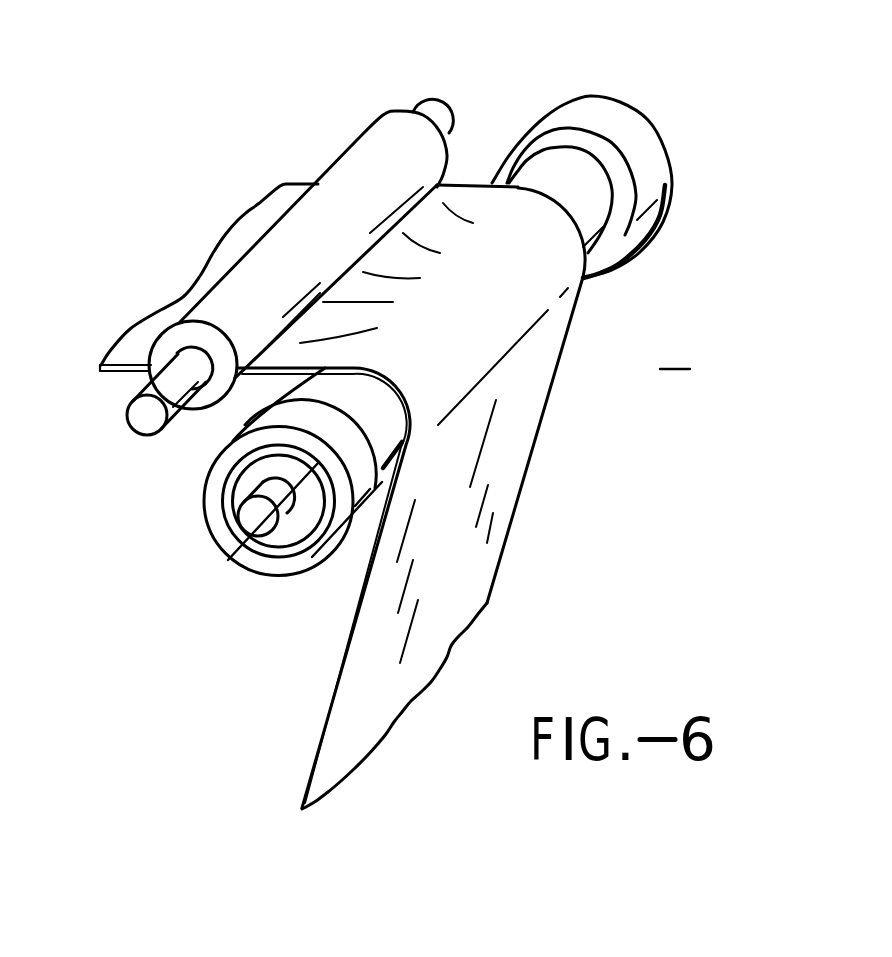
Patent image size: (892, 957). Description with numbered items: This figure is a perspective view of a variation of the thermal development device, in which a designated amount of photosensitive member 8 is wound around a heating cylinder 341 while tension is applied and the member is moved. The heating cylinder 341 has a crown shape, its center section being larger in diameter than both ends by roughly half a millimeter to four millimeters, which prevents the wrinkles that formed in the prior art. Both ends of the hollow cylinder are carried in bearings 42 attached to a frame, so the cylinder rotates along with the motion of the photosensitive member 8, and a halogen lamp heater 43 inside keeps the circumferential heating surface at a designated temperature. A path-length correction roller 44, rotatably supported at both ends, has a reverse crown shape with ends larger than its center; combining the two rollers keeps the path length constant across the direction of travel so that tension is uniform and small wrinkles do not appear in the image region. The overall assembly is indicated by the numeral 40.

The photosensitive member 8 is at (506, 497).
The sheet guide assembly 40 is at (675, 353).
The bearings 42 is at (318, 547).
The halogen lamp heater 43 is at (257, 519).
The path-length correction roller 44 is at (234, 282).
The heating cylinder 341 is at (585, 205).